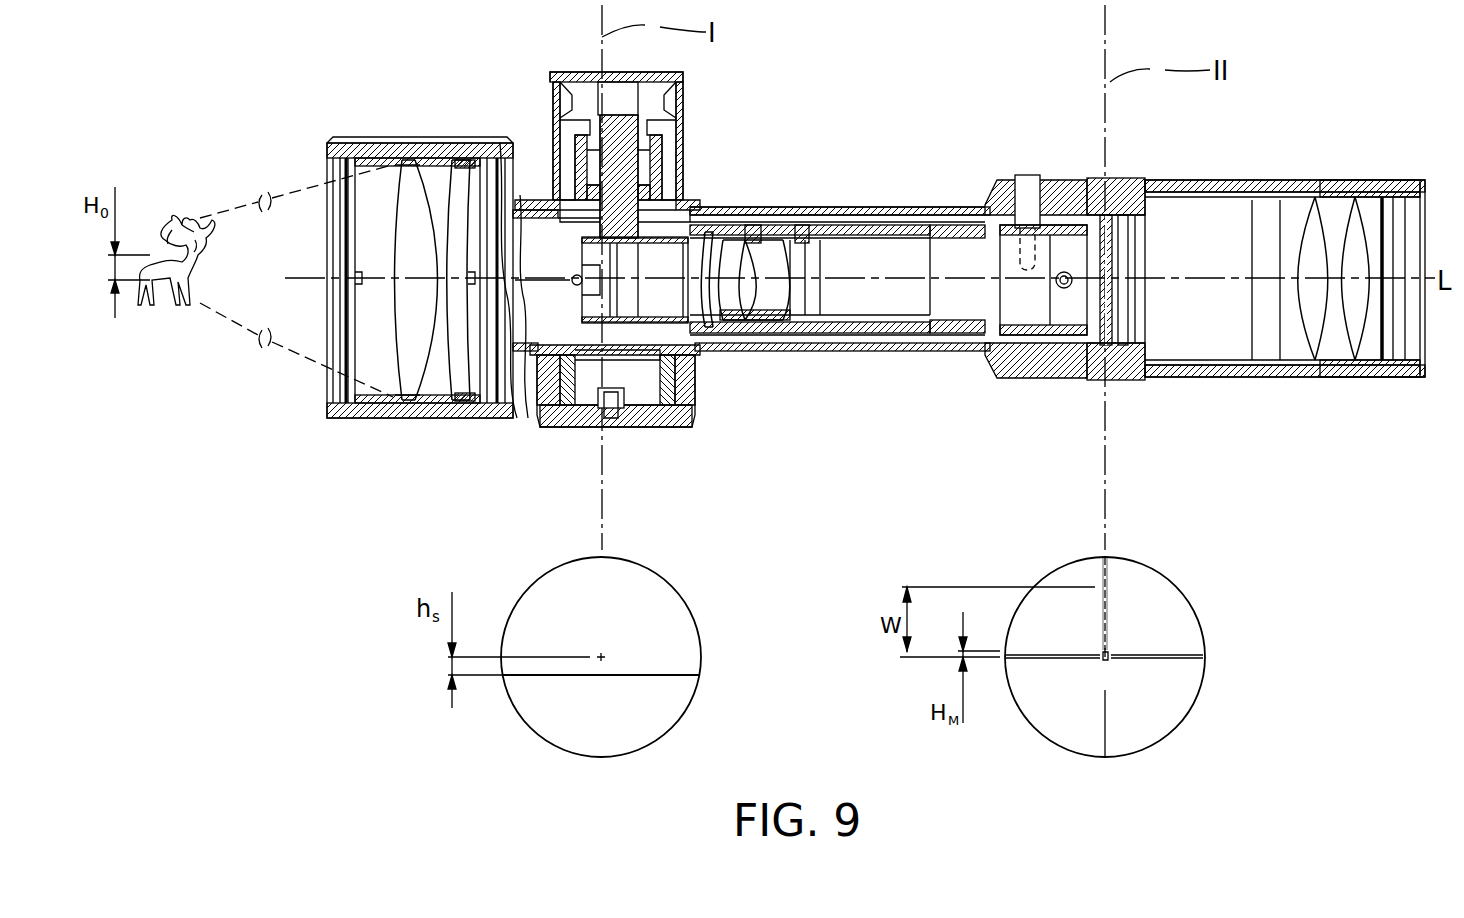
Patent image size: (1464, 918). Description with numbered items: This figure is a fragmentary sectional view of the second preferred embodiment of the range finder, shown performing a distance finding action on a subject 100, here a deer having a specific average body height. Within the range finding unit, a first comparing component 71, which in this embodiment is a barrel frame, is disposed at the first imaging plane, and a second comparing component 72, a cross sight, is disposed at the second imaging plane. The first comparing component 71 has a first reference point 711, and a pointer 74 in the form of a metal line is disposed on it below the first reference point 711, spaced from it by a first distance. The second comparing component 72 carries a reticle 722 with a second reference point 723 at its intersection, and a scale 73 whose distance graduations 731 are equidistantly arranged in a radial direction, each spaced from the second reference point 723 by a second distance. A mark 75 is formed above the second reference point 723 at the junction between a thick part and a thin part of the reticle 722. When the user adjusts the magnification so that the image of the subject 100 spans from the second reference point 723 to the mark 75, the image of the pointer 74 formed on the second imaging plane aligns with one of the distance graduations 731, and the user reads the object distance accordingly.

The subject 100 is at (184, 220).
The first comparing component 71 is at (582, 252).
The second comparing component 72 is at (1096, 318).
The first reference point 711 is at (606, 652).
The pointer 74 is at (643, 675).
The scale 73 is at (1219, 603).
The distance graduations 731 is at (1107, 592).
The mark 75 is at (1105, 652).
The reticle 722 is at (1133, 660).
The second reference point 723 is at (1100, 660).